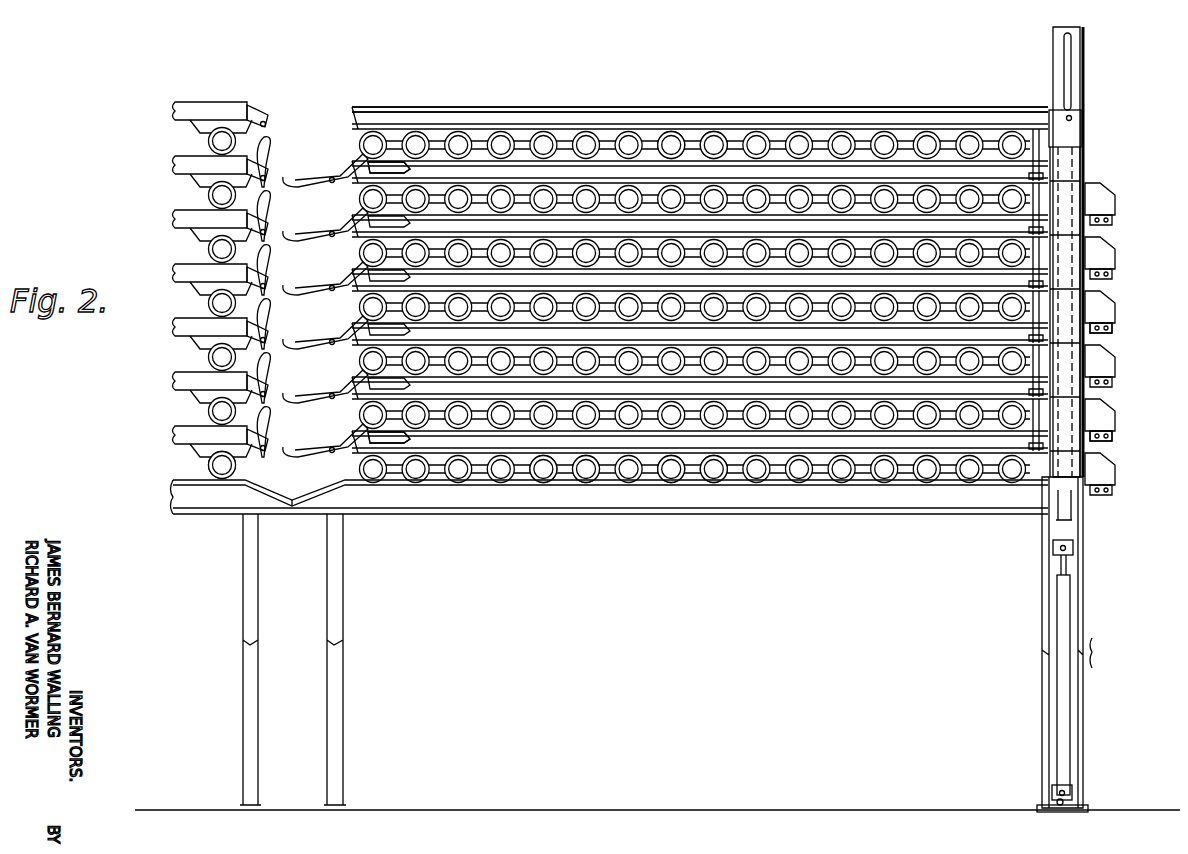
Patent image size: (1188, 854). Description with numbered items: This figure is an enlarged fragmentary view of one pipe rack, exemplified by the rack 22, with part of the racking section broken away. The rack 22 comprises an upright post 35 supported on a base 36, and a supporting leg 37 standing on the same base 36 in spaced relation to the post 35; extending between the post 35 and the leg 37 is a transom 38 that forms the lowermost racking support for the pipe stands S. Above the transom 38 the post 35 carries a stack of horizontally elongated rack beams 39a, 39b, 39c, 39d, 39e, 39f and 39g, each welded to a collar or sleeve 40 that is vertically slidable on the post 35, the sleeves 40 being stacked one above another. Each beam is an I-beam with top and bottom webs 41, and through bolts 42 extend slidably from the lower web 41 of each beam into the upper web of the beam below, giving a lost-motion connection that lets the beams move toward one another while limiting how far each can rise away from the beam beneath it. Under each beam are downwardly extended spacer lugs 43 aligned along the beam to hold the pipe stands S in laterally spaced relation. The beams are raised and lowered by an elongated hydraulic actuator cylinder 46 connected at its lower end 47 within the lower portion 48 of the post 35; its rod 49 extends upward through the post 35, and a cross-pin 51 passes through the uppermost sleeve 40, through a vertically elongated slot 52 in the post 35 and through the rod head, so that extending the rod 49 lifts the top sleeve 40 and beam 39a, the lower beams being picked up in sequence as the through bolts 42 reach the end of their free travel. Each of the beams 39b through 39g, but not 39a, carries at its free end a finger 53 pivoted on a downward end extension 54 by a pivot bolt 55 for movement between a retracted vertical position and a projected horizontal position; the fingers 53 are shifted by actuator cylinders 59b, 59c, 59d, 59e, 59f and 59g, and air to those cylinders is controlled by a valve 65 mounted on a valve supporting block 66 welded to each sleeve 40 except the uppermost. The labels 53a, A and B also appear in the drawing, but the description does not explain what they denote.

The rack 22 is at (1088, 60).
The post 35 is at (1090, 95).
The base 36 is at (1070, 810).
The supporting leg 37 is at (345, 672).
The transom 38 is at (655, 517).
The rack beam 39a is at (588, 118).
The rack beam 39b is at (478, 168).
The rack beam 39c is at (865, 232).
The rack beam 39d is at (1050, 285).
The rack beam 39e is at (1085, 340).
The rack beam 39f is at (777, 388).
The rack beam 39g is at (948, 440).
The collar or sleeve 40 is at (1085, 172).
The webs 41 is at (560, 127).
The through bolts 42 is at (1058, 110).
The spacer lugs 43 is at (733, 460).
The hydraulic actuator cylinder 46 is at (1066, 700).
The lower end 47 is at (1055, 803).
The lower portion 48 is at (1085, 605).
The rod 49 is at (1075, 547).
The cross-pin 51 is at (1082, 117).
The vertically elongated slot 52 is at (1067, 60).
The finger 53 is at (305, 183).
The notch 53a is at (307, 487).
The downward end extension 54 is at (345, 172).
The pivot bolt 55 is at (330, 232).
The actuator cylinder 59b is at (393, 168).
The actuator cylinder 59c is at (333, 286).
The actuator cylinder 59d is at (330, 340).
The actuator cylinder 59e is at (332, 395).
The actuator cylinder 59f is at (335, 448).
The actuator cylinder 59g is at (388, 440).
The valve 65 is at (1105, 330).
The valve supporting block 66 is at (1110, 200).
The conveyor assembly A is at (790, 106).
The roller stack B is at (195, 100).
The pipe stands S is at (717, 131).